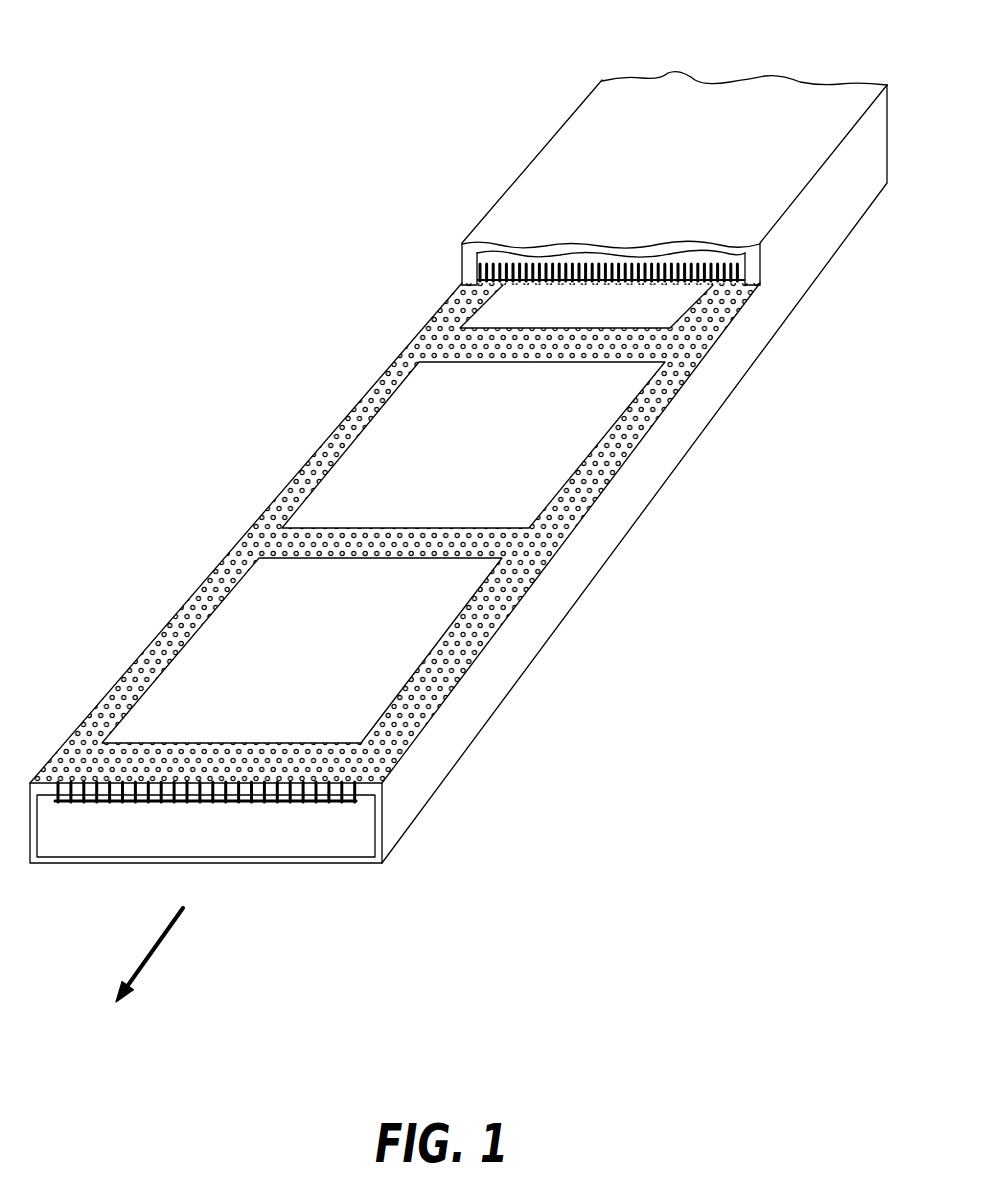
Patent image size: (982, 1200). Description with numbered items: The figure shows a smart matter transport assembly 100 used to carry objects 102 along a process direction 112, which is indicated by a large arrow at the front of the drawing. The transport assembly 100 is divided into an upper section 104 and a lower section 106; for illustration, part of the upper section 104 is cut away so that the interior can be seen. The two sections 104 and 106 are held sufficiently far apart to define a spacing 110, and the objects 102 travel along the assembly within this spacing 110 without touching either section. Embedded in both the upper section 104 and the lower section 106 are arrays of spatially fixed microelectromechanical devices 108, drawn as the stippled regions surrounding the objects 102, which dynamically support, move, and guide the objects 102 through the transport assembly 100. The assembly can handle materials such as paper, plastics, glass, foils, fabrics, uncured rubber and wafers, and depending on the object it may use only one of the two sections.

The transport assembly 100 is at (478, 93).
The objects 102 is at (638, 300).
The upper section 104 is at (565, 177).
The lower section 106 is at (805, 248).
The microelectromechanical devices 108 is at (375, 767).
The spacing 110 is at (737, 286).
The process direction 112 is at (137, 973).